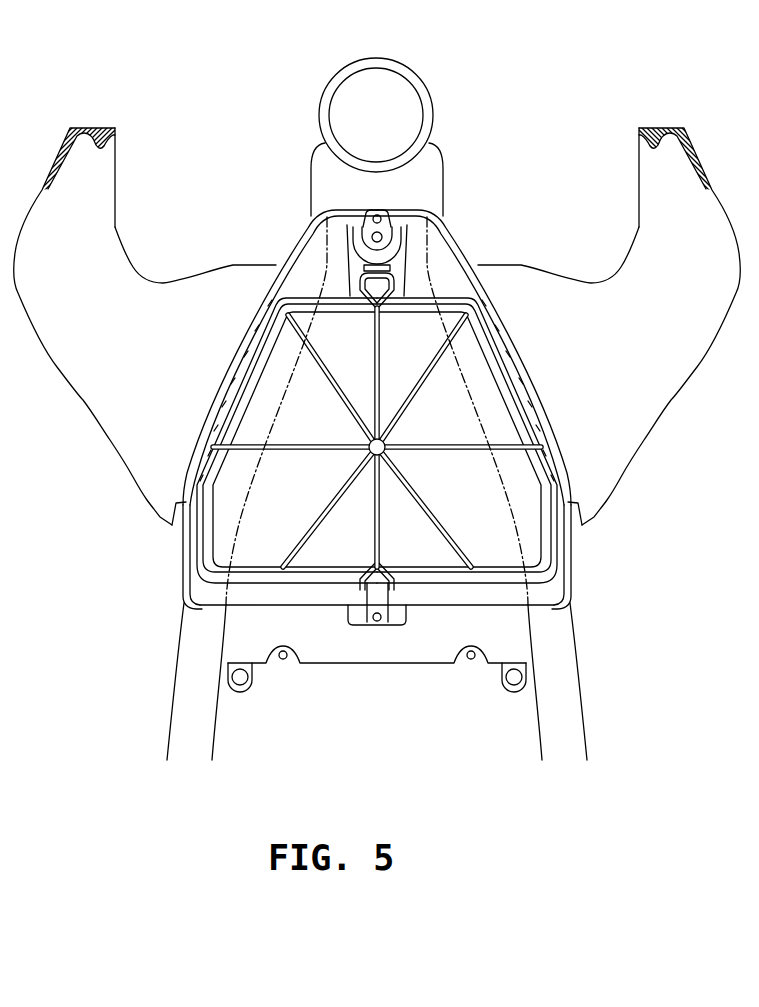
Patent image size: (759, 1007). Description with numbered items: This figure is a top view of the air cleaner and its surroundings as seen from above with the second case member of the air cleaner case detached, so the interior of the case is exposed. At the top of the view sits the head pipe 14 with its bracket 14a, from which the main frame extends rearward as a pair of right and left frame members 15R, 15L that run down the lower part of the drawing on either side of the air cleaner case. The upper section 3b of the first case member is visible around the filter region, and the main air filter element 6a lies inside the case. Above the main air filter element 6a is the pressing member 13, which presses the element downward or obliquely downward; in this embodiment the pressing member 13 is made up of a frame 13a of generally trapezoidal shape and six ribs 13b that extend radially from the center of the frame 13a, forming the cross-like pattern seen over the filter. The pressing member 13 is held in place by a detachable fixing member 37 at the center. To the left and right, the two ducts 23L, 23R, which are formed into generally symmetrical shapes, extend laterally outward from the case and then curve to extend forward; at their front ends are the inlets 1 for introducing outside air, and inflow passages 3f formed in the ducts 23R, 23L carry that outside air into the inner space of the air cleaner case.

The inlet 1 is at (119, 167).
The inflow passage 3f is at (94, 188).
The upper section 3b is at (310, 260).
The main air filter element 6a is at (507, 548).
The pressing member 13 is at (447, 528).
The frame 13a is at (540, 448).
The rib 13b is at (579, 498).
The head pipe 14 is at (421, 74).
The bracket 14a is at (438, 143).
The left frame member 15L is at (177, 669).
The right frame member 15R is at (578, 669).
The left duct 23L is at (214, 265).
The right duct 23R is at (540, 265).
The fixing member 37 is at (385, 340).